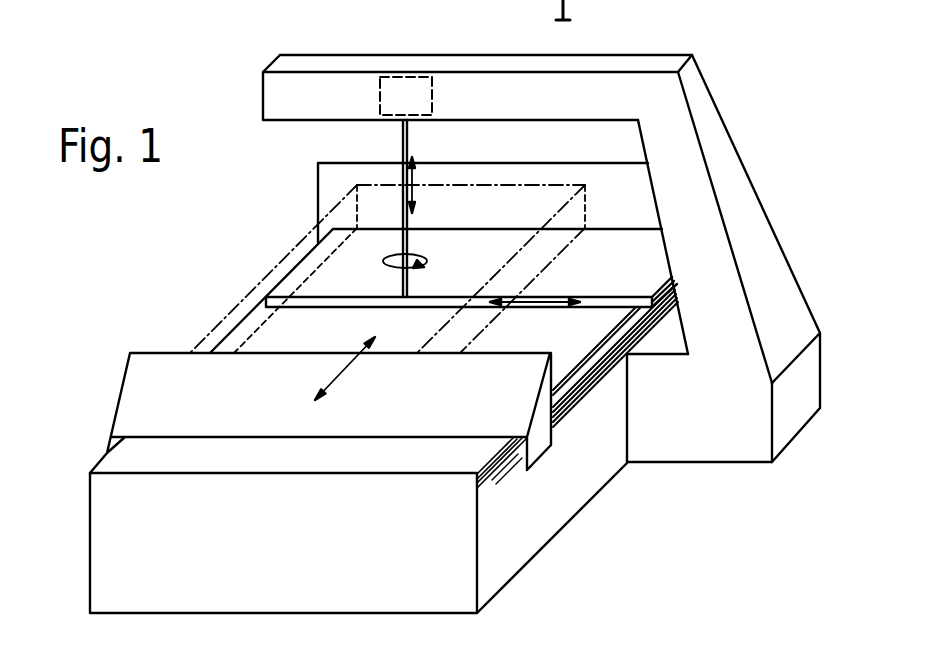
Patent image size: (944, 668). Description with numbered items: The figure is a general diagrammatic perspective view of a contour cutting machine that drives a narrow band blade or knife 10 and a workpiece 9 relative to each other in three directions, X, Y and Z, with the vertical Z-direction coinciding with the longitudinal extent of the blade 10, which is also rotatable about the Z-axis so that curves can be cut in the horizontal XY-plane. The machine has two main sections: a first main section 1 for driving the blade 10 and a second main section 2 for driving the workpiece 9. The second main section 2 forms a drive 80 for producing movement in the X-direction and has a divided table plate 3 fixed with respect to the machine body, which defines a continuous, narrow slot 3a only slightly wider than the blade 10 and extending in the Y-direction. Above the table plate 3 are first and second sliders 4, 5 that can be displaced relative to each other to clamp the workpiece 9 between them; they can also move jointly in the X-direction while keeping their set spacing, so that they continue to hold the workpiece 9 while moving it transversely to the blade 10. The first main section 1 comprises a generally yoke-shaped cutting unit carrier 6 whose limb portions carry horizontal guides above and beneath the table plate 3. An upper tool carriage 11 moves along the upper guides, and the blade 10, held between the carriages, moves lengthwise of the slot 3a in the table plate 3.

The first main section 1 is at (758, 183).
The second main section 2 is at (140, 343).
The table plate 3 is at (303, 263).
The slot 3a is at (263, 298).
The first slider 4 is at (133, 402).
The second slider 5 is at (327, 181).
The cutting unit carrier 6 is at (763, 267).
The workpiece 9 is at (332, 212).
The blade 10 is at (403, 135).
The upper tool carriage 11 is at (380, 92).
The drive 80 is at (569, 414).